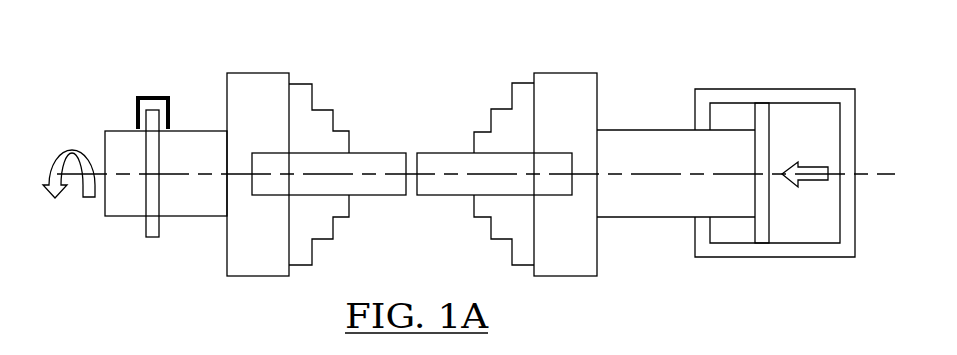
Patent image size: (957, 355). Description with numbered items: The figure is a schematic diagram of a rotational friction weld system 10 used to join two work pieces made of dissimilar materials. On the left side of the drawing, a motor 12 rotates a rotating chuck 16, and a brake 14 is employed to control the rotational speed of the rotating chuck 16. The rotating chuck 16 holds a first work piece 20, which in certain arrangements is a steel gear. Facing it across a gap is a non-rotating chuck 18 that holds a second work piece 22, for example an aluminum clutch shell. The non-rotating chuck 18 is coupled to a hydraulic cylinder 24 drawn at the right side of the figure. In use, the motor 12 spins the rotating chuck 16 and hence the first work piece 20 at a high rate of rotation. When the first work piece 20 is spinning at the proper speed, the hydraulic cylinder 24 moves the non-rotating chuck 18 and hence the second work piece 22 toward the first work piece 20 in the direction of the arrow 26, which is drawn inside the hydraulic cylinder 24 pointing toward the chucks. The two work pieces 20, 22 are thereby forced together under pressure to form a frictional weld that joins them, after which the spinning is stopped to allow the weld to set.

The rotational friction weld system 10 is at (396, 57).
The motor 12 is at (108, 218).
The brake 14 is at (153, 238).
The rotating chuck 16 is at (265, 276).
The non-rotating chuck 18 is at (585, 276).
The first work piece 20 is at (322, 110).
The second work piece 22 is at (488, 121).
The hydraulic cylinder 24 is at (672, 130).
The arrow 26 is at (808, 181).